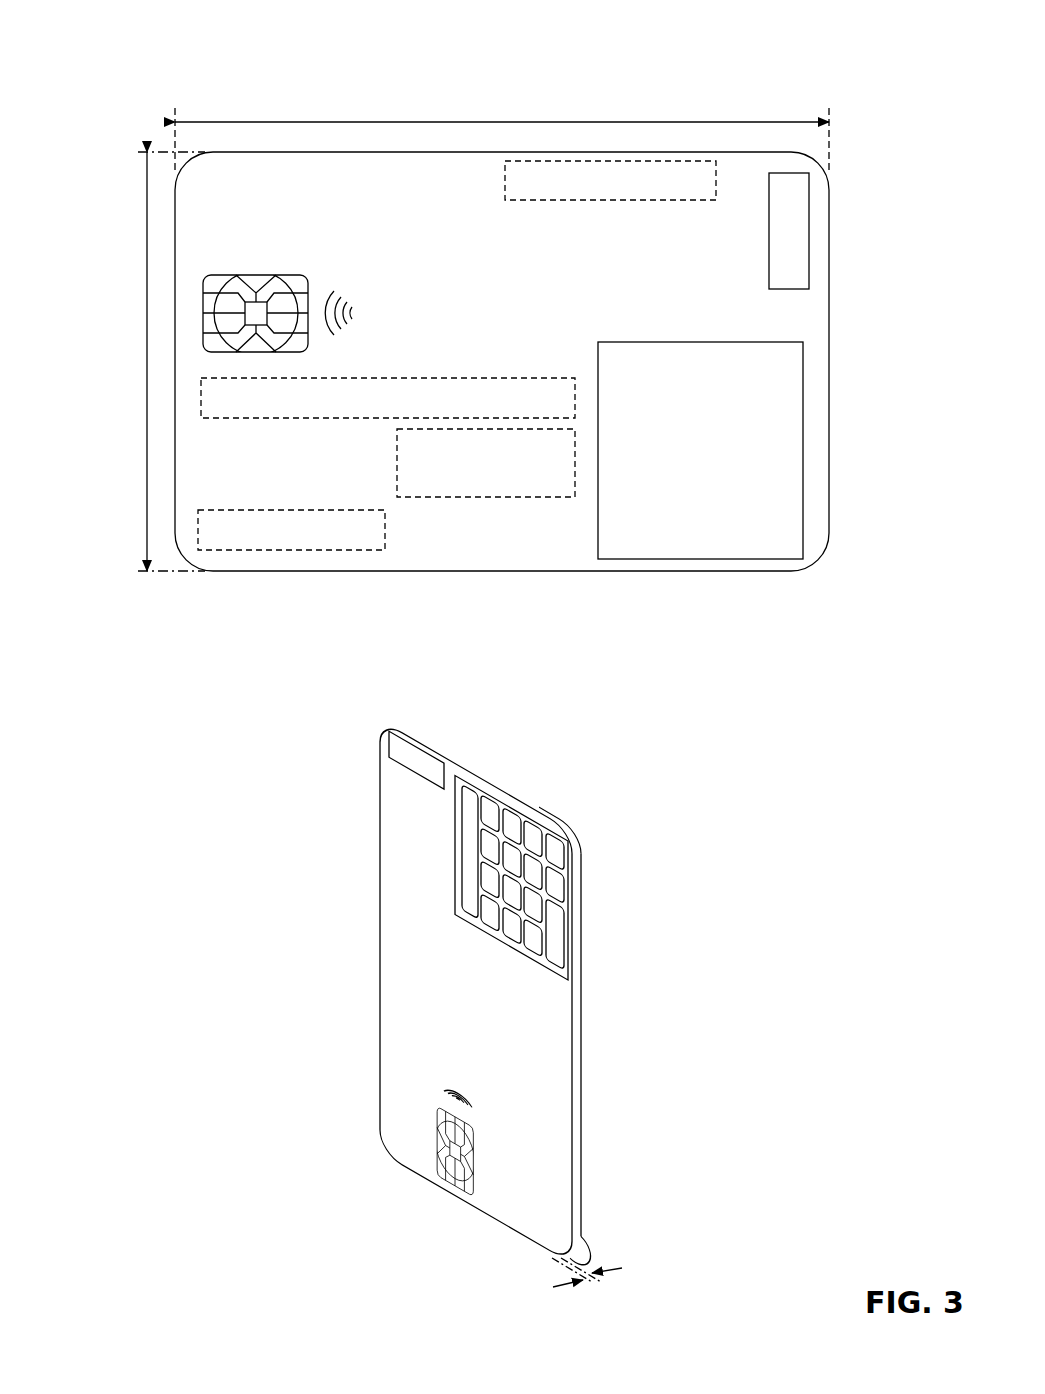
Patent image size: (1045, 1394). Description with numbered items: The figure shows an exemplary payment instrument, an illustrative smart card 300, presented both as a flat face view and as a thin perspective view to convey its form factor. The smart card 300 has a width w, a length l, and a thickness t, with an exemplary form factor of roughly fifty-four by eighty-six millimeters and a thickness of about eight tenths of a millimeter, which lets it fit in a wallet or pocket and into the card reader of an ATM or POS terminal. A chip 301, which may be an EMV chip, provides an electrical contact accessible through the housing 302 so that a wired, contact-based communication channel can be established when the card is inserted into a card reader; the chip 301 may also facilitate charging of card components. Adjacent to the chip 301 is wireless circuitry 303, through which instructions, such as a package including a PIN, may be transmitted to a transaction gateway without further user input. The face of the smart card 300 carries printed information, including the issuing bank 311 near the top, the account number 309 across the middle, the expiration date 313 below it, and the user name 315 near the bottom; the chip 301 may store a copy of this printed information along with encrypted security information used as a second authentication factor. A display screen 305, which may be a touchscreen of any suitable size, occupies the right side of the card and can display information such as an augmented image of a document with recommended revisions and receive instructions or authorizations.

The smart card 300 is at (120, 38).
The chip 301 is at (293, 275).
The housing 302 is at (502, 572).
The wireless circuitry 303 is at (352, 318).
The display screen 305 is at (690, 560).
The account number 309 is at (475, 378).
The issuing bank 311 is at (503, 177).
The expiration date 313 is at (397, 460).
The user name 315 is at (285, 551).